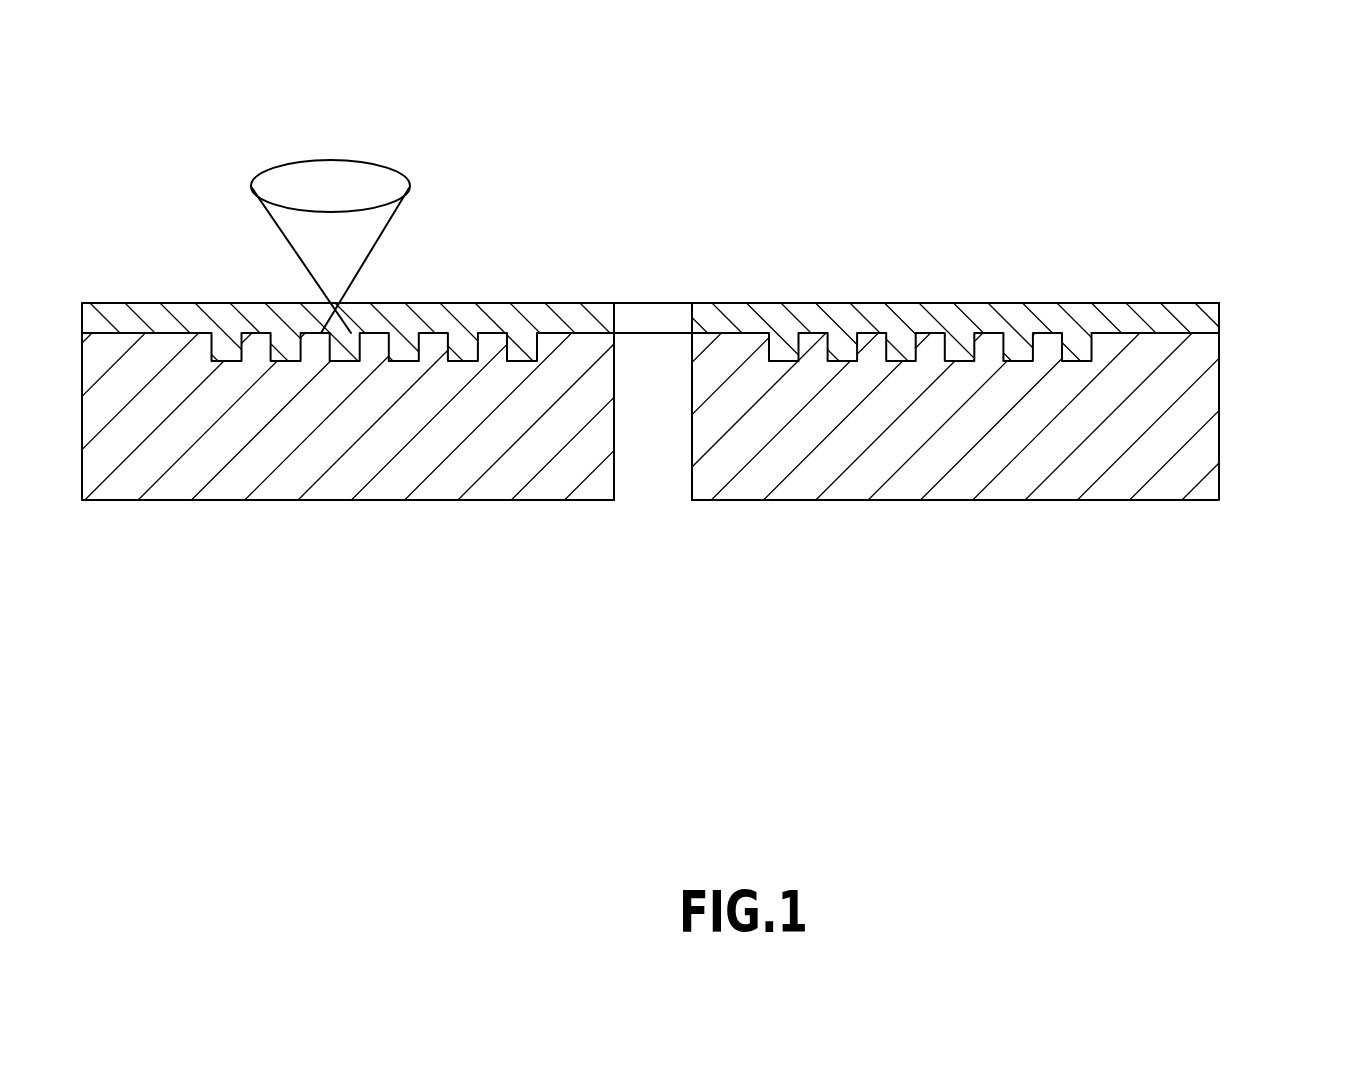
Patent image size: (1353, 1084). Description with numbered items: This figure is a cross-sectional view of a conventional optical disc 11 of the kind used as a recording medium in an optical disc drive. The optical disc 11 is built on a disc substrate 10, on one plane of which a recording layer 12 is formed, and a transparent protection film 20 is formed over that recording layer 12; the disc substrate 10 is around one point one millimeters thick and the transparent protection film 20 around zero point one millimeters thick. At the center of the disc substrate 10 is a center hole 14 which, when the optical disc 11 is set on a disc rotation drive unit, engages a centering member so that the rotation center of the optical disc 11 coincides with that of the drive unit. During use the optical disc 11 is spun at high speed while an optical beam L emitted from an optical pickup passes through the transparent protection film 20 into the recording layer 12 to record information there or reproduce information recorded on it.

The disc substrate 10 is at (1218, 435).
The optical disc 11 is at (1112, 226).
The recording layer 12 is at (917, 336).
The center hole 14 is at (613, 477).
The transparent protection film 20 is at (1039, 311).
The optical beam L is at (303, 160).